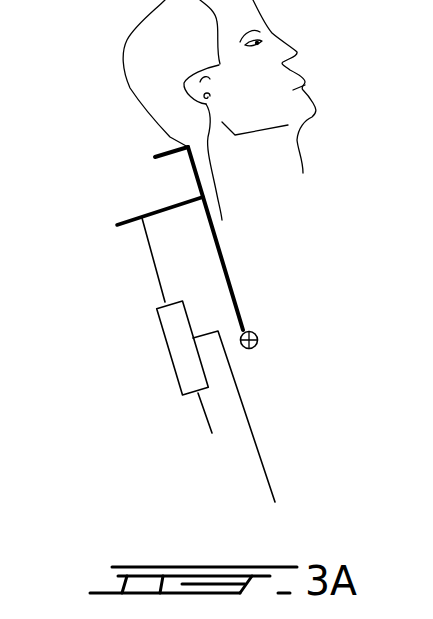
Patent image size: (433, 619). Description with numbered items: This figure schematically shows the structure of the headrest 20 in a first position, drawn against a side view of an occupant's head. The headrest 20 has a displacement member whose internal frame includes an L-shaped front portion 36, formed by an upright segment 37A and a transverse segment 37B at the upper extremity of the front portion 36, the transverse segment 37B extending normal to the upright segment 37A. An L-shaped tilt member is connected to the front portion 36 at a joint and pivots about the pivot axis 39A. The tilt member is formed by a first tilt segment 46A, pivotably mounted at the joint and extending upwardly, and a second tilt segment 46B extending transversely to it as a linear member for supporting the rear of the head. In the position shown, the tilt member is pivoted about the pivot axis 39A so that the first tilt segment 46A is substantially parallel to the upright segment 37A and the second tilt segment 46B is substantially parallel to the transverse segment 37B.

The headrest 20 is at (199, 308).
The front portion 36 is at (225, 265).
The upright segment 37A is at (216, 236).
The transverse segment 37B is at (160, 210).
The pivot axis 39A is at (258, 341).
The first tilt segment 46A is at (206, 184).
The second tilt segment 46B is at (163, 154).